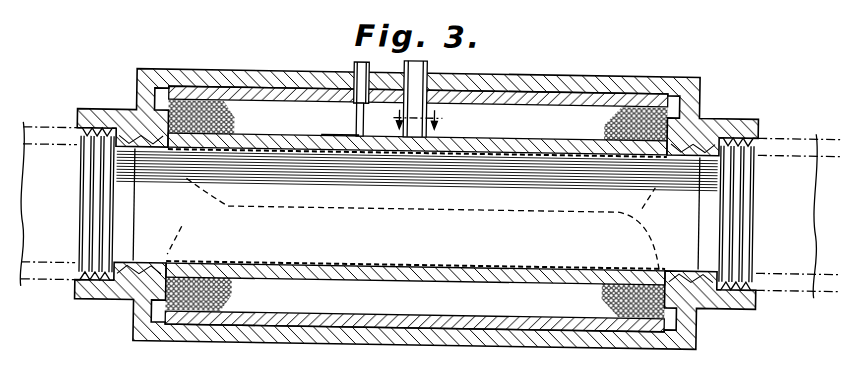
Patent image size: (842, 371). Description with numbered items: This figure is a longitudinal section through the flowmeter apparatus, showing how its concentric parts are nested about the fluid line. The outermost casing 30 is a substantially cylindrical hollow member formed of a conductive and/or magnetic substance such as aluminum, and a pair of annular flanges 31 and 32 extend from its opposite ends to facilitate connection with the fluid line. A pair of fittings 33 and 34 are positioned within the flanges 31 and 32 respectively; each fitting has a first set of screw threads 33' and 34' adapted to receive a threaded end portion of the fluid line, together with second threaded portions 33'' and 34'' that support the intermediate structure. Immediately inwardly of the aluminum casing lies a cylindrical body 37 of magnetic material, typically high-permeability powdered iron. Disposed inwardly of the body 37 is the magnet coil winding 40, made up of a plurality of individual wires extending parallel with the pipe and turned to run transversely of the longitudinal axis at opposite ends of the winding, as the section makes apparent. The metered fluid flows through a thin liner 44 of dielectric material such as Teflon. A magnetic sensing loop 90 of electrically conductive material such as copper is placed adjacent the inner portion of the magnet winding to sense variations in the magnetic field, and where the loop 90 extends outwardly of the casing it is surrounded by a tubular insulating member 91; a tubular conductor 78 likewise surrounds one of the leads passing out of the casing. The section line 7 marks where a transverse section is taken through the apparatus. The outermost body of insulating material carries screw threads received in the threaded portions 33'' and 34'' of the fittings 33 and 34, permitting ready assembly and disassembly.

The section line 7- 7 is at (417, 118).
The outermost casing 30 is at (417, 192).
The annular flange 31 is at (99, 112).
The annular flange 32 is at (746, 116).
The fitting 33 is at (369, 209).
The first screw threads 33' is at (72, 203).
The second threaded portion 33'' is at (144, 204).
The fitting 34 is at (770, 189).
The first screw threads 34' is at (759, 214).
The second threaded portion 34'' is at (686, 213).
The cylindrical body 37 is at (564, 80).
The magnet coil winding 40 is at (194, 103).
The liner 44 is at (420, 267).
The tubular conductor 78 is at (426, 67).
The magnetic sensing loop 90 is at (323, 136).
The tubular insulating member 91 is at (352, 68).